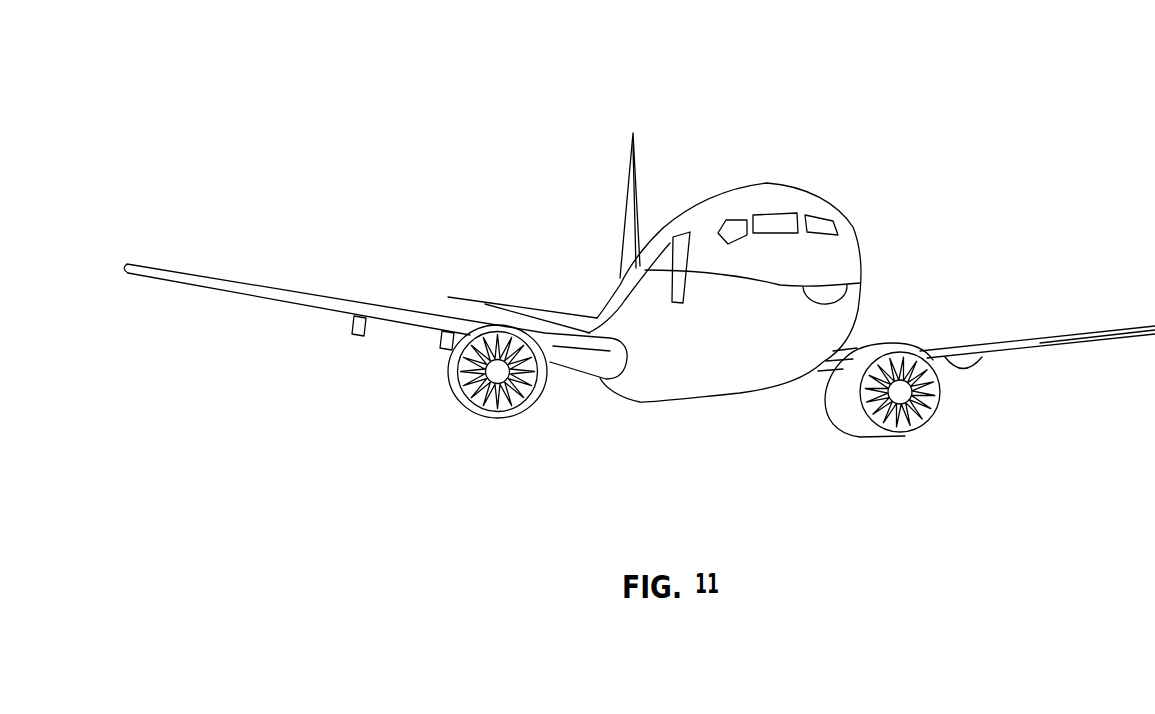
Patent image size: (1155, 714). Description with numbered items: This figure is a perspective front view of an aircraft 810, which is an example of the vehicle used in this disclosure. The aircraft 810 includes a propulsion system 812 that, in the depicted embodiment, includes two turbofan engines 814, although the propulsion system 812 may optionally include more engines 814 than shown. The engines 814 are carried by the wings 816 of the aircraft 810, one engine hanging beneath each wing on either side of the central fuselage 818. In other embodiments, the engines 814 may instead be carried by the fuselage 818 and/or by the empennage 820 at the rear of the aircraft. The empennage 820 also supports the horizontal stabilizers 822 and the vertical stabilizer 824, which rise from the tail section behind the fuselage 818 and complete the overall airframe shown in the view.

The aircraft 810 is at (639, 275).
The propulsion system 812 is at (992, 431).
The turbofan engines 814 is at (493, 418).
The wings 816 is at (267, 292).
The fuselage 818 is at (858, 248).
The empennage 820 is at (620, 278).
The horizontal stabilizers 822 is at (487, 297).
The vertical stabilizer 824 is at (630, 173).